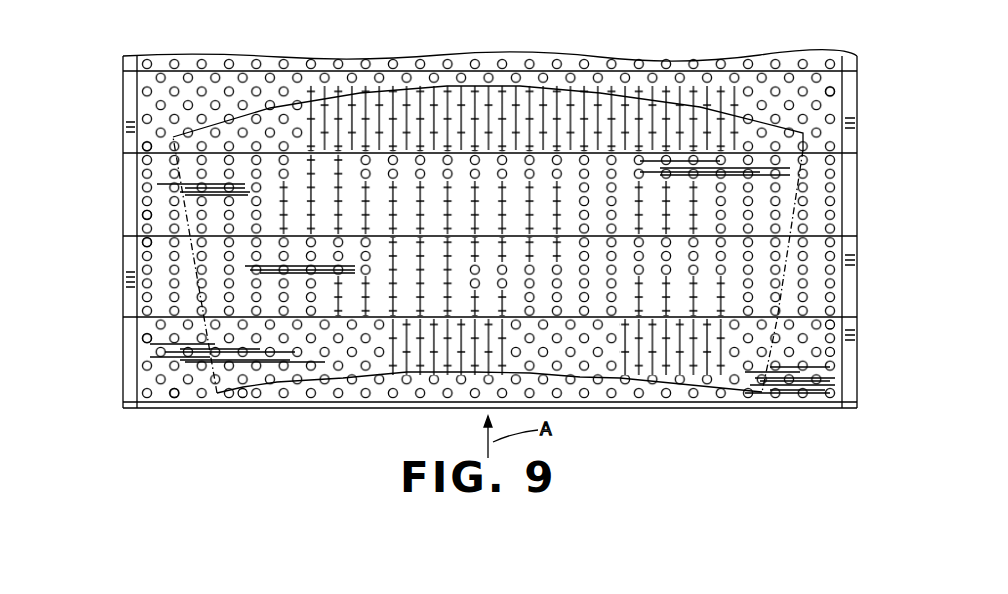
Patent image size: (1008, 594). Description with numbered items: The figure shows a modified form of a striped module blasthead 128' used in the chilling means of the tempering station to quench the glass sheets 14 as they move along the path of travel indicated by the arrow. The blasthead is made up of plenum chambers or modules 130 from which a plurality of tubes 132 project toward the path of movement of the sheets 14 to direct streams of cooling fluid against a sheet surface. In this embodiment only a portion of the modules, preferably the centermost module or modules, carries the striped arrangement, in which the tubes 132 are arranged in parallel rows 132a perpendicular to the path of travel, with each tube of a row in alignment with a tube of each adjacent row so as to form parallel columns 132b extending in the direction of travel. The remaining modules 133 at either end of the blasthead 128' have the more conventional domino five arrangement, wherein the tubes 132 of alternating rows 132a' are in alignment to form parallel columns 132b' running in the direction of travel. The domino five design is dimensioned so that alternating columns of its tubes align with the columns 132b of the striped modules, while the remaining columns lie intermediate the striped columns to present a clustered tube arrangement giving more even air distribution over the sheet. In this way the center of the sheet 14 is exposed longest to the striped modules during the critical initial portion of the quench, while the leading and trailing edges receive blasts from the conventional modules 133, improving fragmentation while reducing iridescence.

The glass sheet 14 is at (360, 92).
The modified striped module blasthead 128' is at (524, 229).
The plenum chambers or modules 130 is at (858, 229).
The tubes 132 is at (226, 65).
The parallel rows 132a is at (480, 167).
The alternating rows 132a' is at (489, 338).
The parallel columns 132b is at (450, 251).
The parallel columns 132b' is at (207, 433).
The conventional modules 133 is at (858, 72).